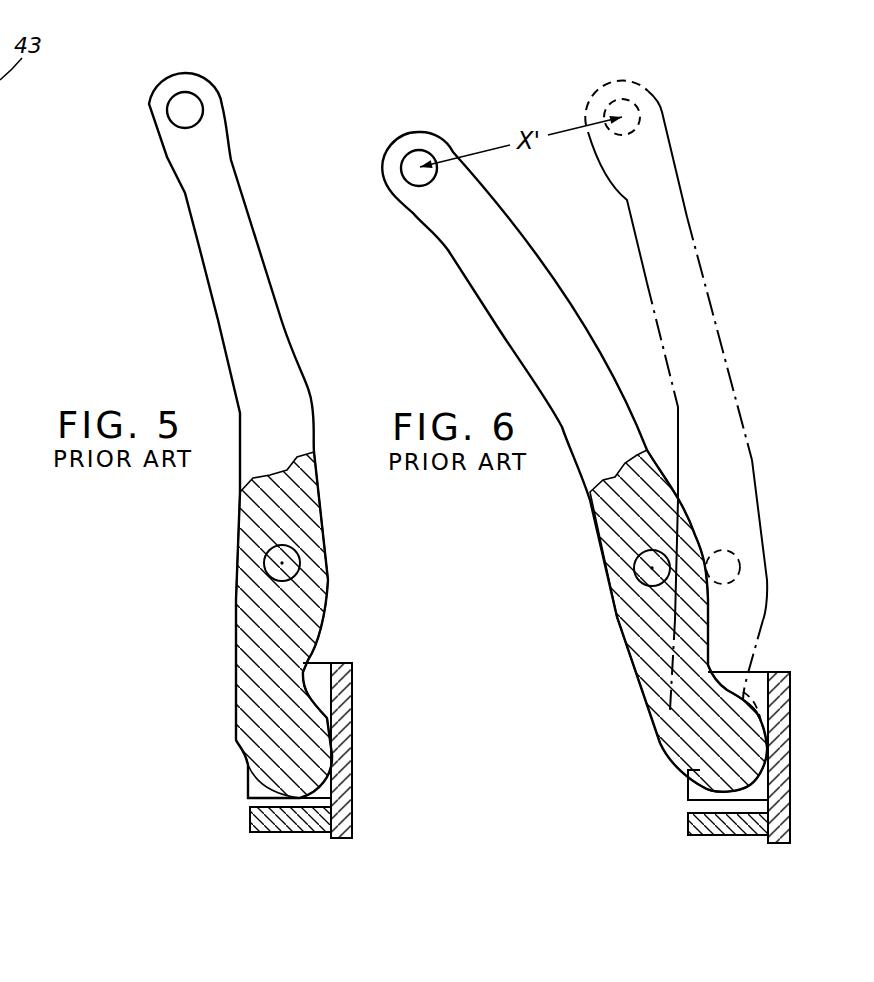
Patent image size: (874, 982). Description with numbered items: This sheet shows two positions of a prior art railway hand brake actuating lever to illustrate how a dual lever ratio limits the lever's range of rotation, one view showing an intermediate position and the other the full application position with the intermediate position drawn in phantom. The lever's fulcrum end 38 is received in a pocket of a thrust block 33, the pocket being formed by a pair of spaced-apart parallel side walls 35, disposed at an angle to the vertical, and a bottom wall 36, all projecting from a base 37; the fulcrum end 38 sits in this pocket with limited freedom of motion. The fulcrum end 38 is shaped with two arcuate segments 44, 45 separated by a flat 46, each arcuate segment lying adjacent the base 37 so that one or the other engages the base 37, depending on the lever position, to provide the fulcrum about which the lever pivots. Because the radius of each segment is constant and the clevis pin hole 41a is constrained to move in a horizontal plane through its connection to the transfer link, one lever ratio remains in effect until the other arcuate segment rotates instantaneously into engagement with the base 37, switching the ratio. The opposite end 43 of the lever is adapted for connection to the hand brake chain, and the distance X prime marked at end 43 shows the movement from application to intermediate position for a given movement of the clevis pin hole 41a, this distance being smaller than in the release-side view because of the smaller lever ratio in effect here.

In FIG. 5, the thrust block 33 is at (357, 673).
In FIG. 6, the thrust block 33 is at (797, 670).
In FIG. 5, the side walls 35 is at (318, 672).
In FIG. 6, the side walls 35 is at (757, 678).
In FIG. 5, the bottom wall 36 is at (285, 826).
In FIG. 6, the bottom wall 36 is at (732, 827).
In FIG. 5, the base 37 is at (333, 775).
In FIG. 6, the base 37 is at (767, 795).
In FIG. 5, the fulcrum end 38 is at (255, 747).
In FIG. 6, the fulcrum end 38 is at (698, 753).
In FIG. 6, the clevis pin hole 41a is at (637, 567).
In FIG. 5, the end of actuating lever 43 is at (216, 97).
In FIG. 6, the end of actuating lever 43 is at (428, 140).
In FIG. 5, the arcuate segment 44 is at (330, 702).
In FIG. 6, the arcuate segment 44 is at (770, 700).
In FIG. 5, the arcuate segment 45 is at (325, 795).
In FIG. 6, the arcuate segment 45 is at (767, 760).
In FIG. 5, the flat 46 is at (333, 735).
In FIG. 6, the flat 46 is at (770, 727).